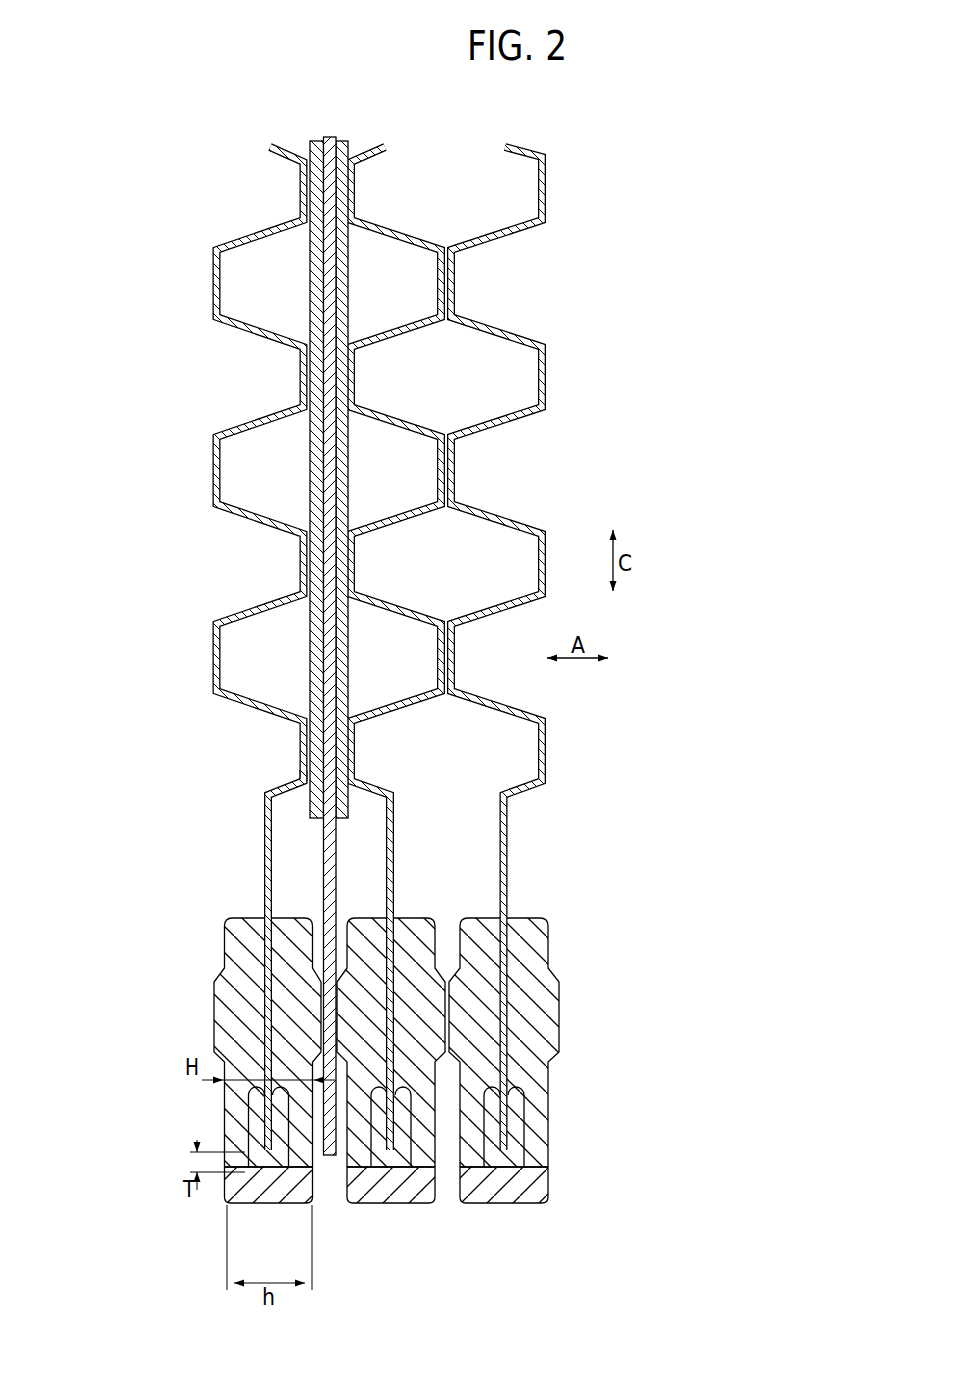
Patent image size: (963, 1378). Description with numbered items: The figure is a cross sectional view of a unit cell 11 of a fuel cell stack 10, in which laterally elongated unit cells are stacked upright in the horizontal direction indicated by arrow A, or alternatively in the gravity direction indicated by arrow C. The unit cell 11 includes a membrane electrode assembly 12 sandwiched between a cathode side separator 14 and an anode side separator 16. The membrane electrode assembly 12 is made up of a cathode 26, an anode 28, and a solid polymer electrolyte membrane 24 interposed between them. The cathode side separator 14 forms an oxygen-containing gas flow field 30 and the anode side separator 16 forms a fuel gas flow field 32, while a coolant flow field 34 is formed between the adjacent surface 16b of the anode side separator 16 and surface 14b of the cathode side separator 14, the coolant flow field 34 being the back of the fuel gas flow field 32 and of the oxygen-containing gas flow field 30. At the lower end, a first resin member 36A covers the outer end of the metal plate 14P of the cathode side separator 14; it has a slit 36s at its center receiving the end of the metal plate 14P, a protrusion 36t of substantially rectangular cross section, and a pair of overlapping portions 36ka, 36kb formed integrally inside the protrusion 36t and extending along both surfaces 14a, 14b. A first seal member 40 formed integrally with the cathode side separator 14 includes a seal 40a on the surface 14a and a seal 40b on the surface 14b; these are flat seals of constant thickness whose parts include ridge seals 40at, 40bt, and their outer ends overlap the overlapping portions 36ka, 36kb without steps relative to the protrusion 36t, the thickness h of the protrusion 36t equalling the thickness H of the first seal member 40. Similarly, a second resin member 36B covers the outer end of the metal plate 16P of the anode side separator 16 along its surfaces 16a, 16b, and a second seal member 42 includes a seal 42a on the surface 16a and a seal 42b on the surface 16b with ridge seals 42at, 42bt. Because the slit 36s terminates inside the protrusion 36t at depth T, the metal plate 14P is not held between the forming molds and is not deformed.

The fuel cell stack 10 is at (598, 119).
The unit cell 11 is at (367, 586).
The membrane electrode assembly 12 is at (328, 600).
The cathode side separator 14 is at (367, 603).
The anode side separator 16 is at (419, 598).
The solid polymer electrolyte membrane 24 is at (326, 620).
The cathode 26 is at (309, 146).
The anode 28 is at (349, 146).
The oxygen-containing gas flow field 30 is at (275, 662).
The fuel gas flow field 32 is at (394, 662).
The coolant flow field 34 is at (447, 566).
The surface of cathode side separator 14a is at (263, 803).
The surface of cathode side separator 14b is at (263, 829).
The surface of anode side separator 16a is at (396, 801).
The surface of anode side separator 16b is at (396, 829).
The metal plate 14P is at (224, 963).
The metal plate 16P is at (508, 1147).
The first seal member 40 is at (344, 1032).
The seal 40a is at (290, 918).
The seal 40b is at (248, 918).
The ridge seal 40at is at (575, 997).
The ridge seal 40bt is at (214, 1043).
The second seal member 42 is at (488, 1032).
The seal 42a is at (372, 918).
The seal 42b is at (411, 918).
The ridge seal 42at is at (607, 990).
The ridge seal 42bt is at (447, 1040).
The first resin member 36A is at (245, 1205).
The second resin member 36B is at (417, 1205).
The slit 36s is at (250, 1117).
The protrusion 36t is at (281, 1205).
The overlapping portion 36ka is at (250, 1140).
The overlapping portion 36kb is at (250, 1098).